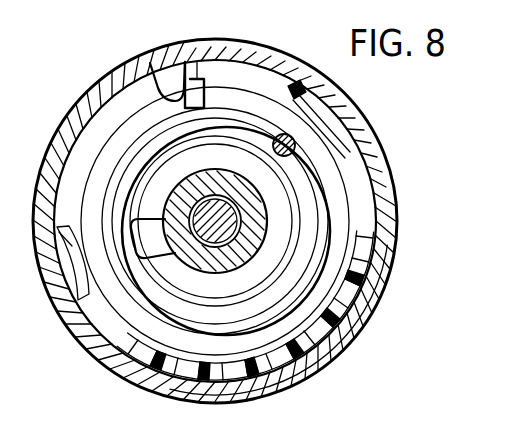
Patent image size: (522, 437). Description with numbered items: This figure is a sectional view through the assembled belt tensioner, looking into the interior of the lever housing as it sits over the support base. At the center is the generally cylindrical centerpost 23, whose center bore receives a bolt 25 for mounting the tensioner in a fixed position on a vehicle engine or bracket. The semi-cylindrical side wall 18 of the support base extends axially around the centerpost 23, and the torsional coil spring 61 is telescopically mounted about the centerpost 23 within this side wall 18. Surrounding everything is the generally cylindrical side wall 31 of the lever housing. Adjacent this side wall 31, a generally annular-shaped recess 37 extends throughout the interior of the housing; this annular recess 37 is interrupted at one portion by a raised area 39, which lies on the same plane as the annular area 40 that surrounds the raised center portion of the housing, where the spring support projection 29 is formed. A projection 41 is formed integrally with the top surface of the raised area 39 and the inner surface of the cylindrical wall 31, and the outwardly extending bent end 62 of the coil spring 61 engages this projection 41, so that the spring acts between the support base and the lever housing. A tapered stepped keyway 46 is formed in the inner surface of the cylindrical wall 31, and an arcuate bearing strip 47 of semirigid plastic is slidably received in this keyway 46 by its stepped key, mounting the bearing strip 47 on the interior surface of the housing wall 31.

The side wall 18 is at (83, 294).
The centerpost 23 is at (199, 187).
The bolt 25 is at (231, 229).
The spring support projection 29 is at (148, 243).
The cylindrical side wall 31 is at (371, 137).
The annular recess 37 is at (256, 72).
The raised area 39 is at (116, 116).
The annular area 40 is at (291, 211).
The projection 41 is at (166, 82).
The tapered stepped keyway 46 is at (349, 318).
The bearing strip 47 is at (190, 400).
The torsional coil spring 61 is at (293, 137).
The outwardly bent end 62 is at (188, 62).